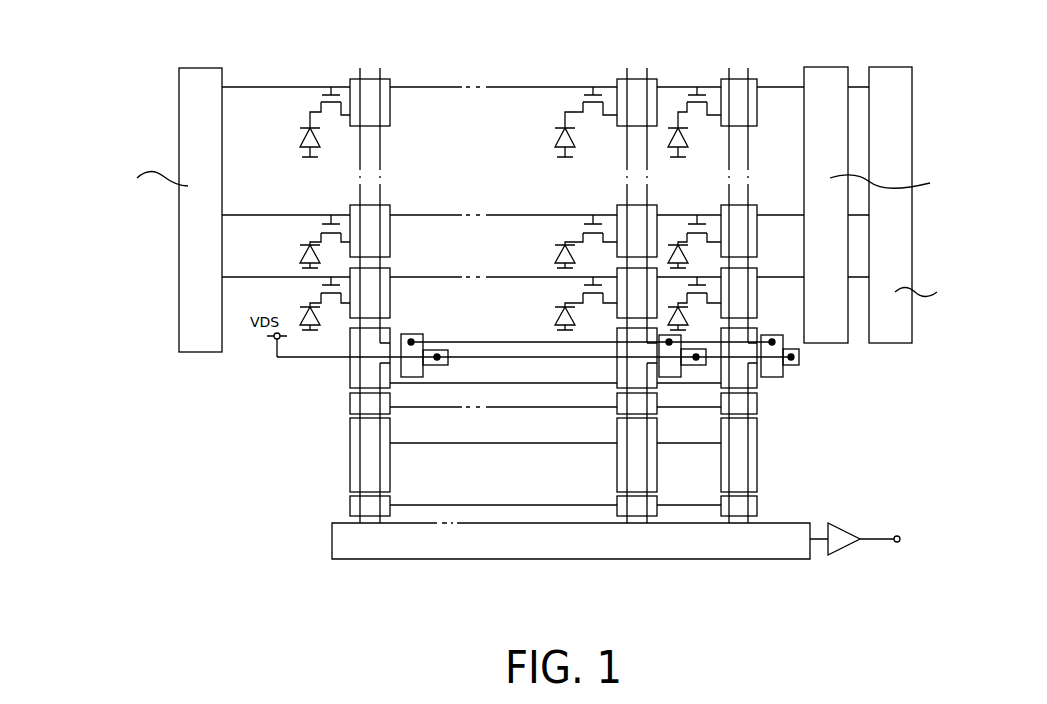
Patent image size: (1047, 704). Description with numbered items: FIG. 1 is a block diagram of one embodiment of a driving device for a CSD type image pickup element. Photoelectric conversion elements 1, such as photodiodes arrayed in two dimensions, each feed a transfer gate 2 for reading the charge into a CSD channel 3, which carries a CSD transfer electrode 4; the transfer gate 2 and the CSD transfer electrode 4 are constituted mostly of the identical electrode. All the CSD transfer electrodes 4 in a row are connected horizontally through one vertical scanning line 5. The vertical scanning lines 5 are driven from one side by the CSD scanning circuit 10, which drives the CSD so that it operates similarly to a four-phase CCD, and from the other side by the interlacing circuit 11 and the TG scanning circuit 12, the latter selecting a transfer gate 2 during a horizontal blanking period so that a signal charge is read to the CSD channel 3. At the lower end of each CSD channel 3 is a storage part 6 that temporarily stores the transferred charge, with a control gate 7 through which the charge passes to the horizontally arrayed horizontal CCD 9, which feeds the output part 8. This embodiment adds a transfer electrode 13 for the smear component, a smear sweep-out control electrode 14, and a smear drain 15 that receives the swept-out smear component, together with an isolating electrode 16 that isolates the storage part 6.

The photoelectric conversion element 1 is at (558, 138).
The transfer gate 2 is at (317, 111).
The CSD channel 3 is at (740, 67).
The CSD transfer electrode 4 is at (391, 118).
The vertical scanning line 5 is at (523, 82).
The storage part 6 is at (757, 455).
The control gate 7 is at (349, 507).
The output part 8 is at (841, 523).
The horizontal CCD 9 is at (679, 560).
The CSD scanning circuit 10 is at (192, 67).
The interlacing circuit 11 is at (833, 67).
The TG scanning circuit 12 is at (883, 67).
The transfer electrode of smear component 13 is at (349, 376).
The smear sweep-out control electrode 14 is at (418, 335).
The smear drain 15 is at (450, 353).
The isolating electrode 16 is at (349, 409).